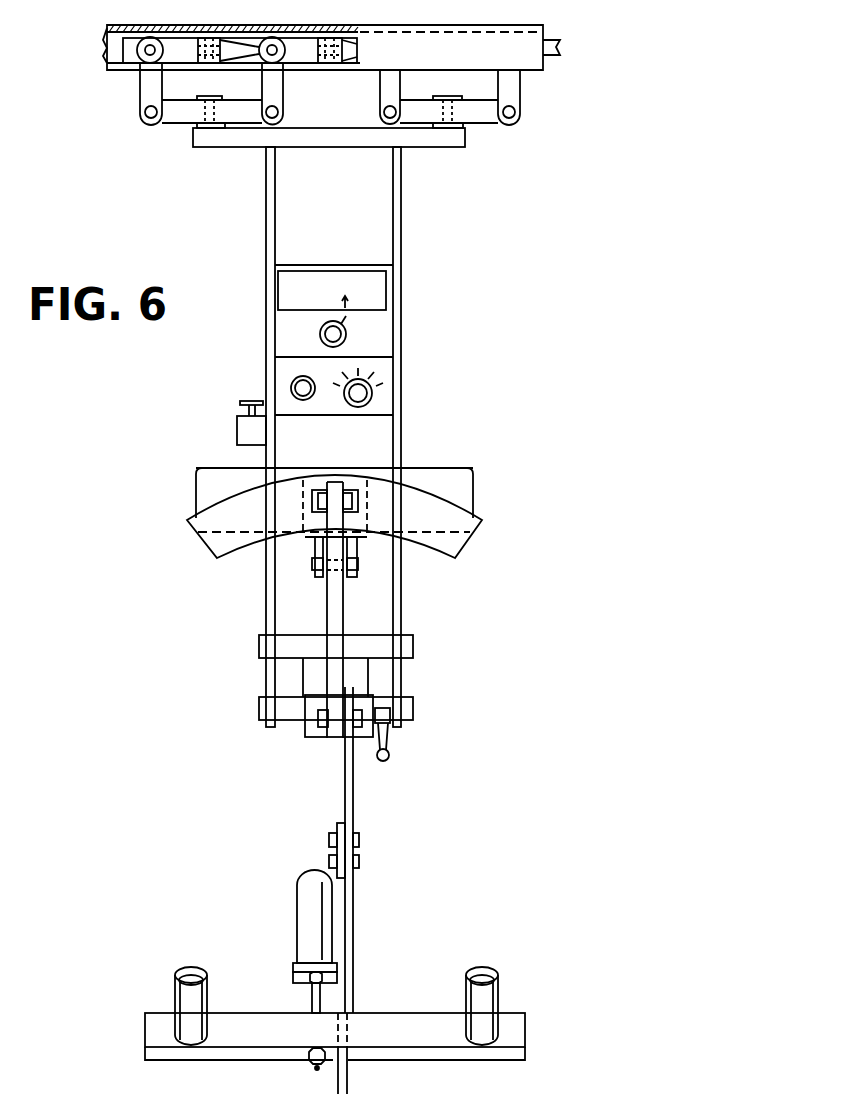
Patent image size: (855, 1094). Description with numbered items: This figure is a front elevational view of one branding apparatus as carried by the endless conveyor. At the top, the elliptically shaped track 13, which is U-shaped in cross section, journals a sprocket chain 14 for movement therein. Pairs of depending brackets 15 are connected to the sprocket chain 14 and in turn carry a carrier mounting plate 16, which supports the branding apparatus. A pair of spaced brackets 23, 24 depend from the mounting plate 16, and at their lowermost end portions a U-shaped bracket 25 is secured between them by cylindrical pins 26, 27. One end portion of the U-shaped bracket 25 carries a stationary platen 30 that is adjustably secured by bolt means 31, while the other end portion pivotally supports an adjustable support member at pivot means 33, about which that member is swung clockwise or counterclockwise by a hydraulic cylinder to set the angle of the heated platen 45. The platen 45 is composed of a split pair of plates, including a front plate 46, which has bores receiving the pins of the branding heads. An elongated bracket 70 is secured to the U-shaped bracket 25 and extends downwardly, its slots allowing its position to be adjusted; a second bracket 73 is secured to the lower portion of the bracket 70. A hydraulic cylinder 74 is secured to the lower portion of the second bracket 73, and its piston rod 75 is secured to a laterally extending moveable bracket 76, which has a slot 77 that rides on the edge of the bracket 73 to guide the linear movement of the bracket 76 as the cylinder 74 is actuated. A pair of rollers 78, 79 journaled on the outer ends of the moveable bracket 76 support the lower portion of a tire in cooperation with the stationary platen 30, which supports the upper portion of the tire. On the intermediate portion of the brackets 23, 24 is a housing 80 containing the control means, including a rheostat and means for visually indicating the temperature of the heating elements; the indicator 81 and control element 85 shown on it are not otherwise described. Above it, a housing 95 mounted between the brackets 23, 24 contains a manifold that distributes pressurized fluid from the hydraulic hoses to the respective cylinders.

The track 13 is at (512, 23).
The sprocket chain 14 is at (178, 47).
The depending brackets 15 is at (267, 85).
The carrier mounting plate 16 is at (415, 138).
The bracket 23 is at (268, 221).
The bracket 24 is at (399, 228).
The U-shaped bracket 25 is at (335, 617).
The cylindrical pin 26 is at (377, 640).
The cylindrical pin 27 is at (290, 703).
The stationary platen 30 is at (457, 547).
The bolt means 31 is at (312, 497).
The pivot means 33 is at (313, 563).
The platen 45 is at (488, 461).
The front plate 46 is at (200, 482).
The elongated bracket 70 is at (344, 778).
The second bracket 73 is at (345, 932).
The hydraulic cylinder 74 is at (307, 910).
The piston rod 75 is at (312, 999).
The moveable bracket 76 is at (363, 1023).
The slot 77 is at (345, 1062).
The roller 78 is at (180, 1007).
The roller 79 is at (473, 1007).
The housing 80 is at (282, 339).
The indicator lamp 81 is at (387, 403).
The valve 85 is at (242, 433).
The housing 95 is at (325, 213).